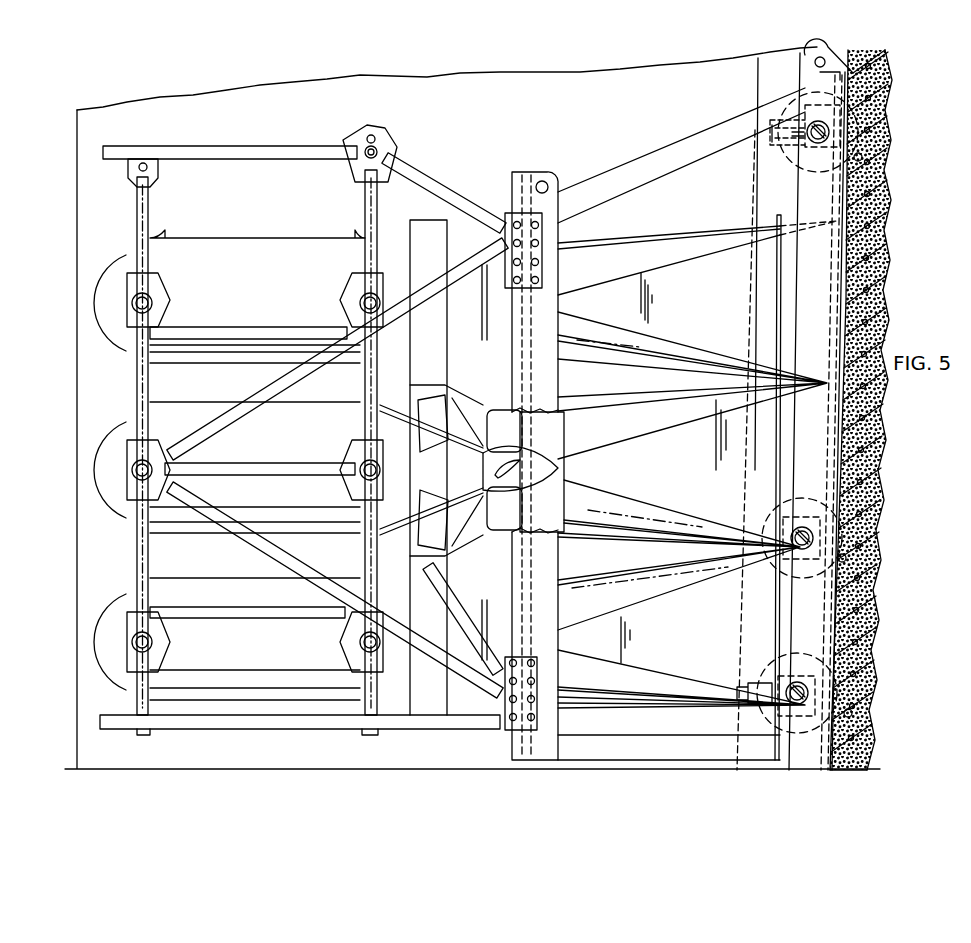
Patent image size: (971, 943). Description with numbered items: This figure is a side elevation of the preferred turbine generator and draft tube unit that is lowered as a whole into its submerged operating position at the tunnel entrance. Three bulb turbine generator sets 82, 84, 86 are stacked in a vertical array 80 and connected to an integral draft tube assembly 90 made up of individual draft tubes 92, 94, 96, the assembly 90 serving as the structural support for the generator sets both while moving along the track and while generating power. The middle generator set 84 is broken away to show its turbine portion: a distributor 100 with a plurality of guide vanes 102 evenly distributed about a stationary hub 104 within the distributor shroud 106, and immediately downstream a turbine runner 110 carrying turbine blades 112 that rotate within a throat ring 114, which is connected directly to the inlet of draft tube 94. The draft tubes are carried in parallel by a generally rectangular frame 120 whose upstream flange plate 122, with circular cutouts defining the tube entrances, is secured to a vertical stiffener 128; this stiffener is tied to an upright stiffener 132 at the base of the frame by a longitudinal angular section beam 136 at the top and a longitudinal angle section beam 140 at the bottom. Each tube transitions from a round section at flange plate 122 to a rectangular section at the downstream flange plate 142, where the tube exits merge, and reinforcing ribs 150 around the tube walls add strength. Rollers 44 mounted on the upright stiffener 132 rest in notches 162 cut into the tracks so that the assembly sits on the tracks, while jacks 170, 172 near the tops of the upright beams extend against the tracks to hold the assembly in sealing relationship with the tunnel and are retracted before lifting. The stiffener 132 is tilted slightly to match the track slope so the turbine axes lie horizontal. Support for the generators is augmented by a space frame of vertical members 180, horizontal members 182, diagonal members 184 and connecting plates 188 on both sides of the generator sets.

The vertical array 80 is at (345, 426).
The bulb turbine generator set 82 is at (252, 250).
The bulb turbine generator set 84 is at (178, 414).
The bulb turbine generator set 86 is at (178, 584).
The integral draft tube assembly 90 is at (635, 141).
The draft tube 92 is at (672, 298).
The draft tube 94 is at (698, 439).
The draft tube 96 is at (654, 640).
The distributor 100 is at (429, 374).
The guide vanes 102 is at (465, 420).
The stationary hub 104 is at (452, 488).
The distributor shroud 106 is at (462, 396).
The turbine runner 110 is at (525, 472).
The turbine blades 112 is at (508, 433).
The throat ring 114 is at (502, 540).
The rectangular frame 120 is at (696, 120).
The flange plate 122 is at (514, 183).
The vertical stiffener 128 is at (555, 185).
The upright stiffener 132 is at (870, 600).
The longitudinal angular section beam 136 is at (685, 152).
The longitudinal angle section beam 140 is at (621, 736).
The flange plate 142 is at (795, 404).
The reinforcing ribs 150 is at (776, 334).
The notches 162 is at (862, 157).
The jack 170 is at (770, 150).
The jack 172 is at (762, 676).
The vertical members 180 is at (150, 203).
The horizontal members 182 is at (260, 150).
The diagonal members 184 is at (240, 404).
The connecting plates 188 is at (156, 320).
The rollers 44 is at (802, 155).